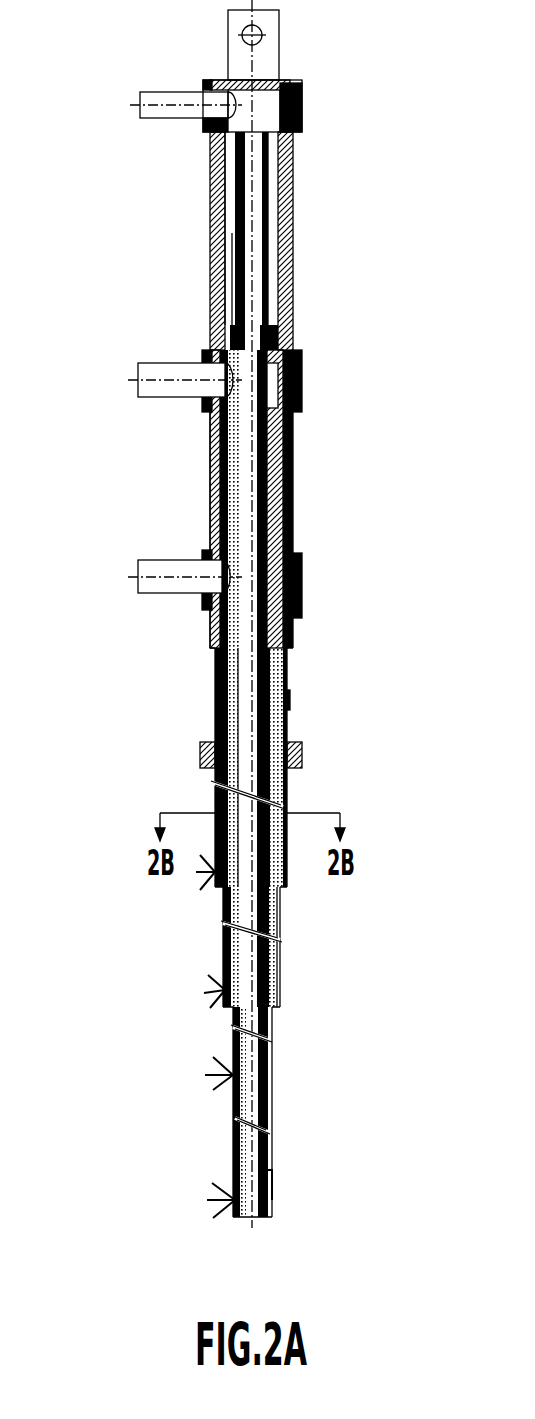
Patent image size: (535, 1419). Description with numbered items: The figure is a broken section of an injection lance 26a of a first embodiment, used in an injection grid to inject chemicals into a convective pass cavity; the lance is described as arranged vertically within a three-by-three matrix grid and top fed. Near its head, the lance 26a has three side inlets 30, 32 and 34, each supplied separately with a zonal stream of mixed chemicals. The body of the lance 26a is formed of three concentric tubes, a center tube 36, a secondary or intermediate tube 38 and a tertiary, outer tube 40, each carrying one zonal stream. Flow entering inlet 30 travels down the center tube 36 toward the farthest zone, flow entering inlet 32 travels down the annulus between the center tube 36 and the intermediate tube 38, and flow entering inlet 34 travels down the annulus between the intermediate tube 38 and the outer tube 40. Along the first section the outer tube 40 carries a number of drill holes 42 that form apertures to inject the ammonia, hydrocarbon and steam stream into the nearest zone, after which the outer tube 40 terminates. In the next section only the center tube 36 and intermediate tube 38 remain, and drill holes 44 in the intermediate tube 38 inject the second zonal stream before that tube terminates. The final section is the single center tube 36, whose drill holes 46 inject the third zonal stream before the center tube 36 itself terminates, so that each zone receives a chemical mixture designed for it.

The lance 26a is at (300, 82).
The inlet 30 is at (140, 110).
The inlet 32 is at (138, 368).
The inlet 34 is at (138, 583).
The center tube 36 is at (210, 233).
The secondary or intermediate tube 38 is at (210, 470).
The tertiary, outer tube 40 is at (215, 720).
The drill holes 42 is at (215, 872).
The drill holes 44 is at (225, 990).
The drill holes 46 is at (233, 1075).